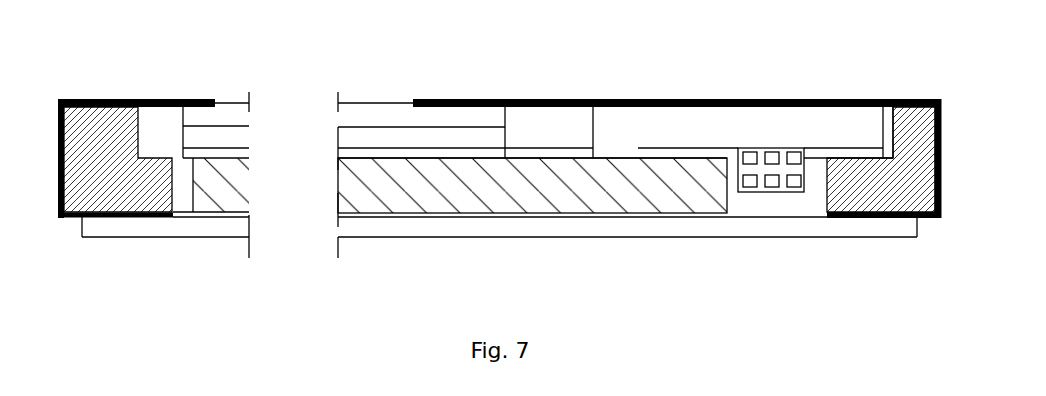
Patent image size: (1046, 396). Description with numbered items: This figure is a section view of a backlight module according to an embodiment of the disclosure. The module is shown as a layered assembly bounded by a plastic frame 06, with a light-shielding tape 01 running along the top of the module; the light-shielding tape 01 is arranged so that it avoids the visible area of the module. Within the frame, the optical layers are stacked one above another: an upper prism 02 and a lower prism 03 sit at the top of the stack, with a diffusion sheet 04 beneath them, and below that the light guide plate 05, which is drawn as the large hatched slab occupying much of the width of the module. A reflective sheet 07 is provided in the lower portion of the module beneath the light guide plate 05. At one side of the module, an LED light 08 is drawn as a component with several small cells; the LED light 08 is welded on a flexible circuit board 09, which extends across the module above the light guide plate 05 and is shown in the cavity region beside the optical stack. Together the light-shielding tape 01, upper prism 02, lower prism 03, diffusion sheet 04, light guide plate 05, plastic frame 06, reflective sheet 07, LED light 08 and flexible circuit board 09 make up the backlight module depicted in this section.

The light-shielding tape 01 is at (82, 100).
The upper prism 02 is at (361, 112).
The lower prism 03 is at (404, 135).
The diffusion sheet 04 is at (539, 153).
The light guide plate 05 is at (473, 195).
The plastic frame 06 is at (127, 125).
The reflective sheet 07 is at (183, 225).
The LED light 08 is at (772, 192).
The flexible circuit board 09 is at (684, 125).